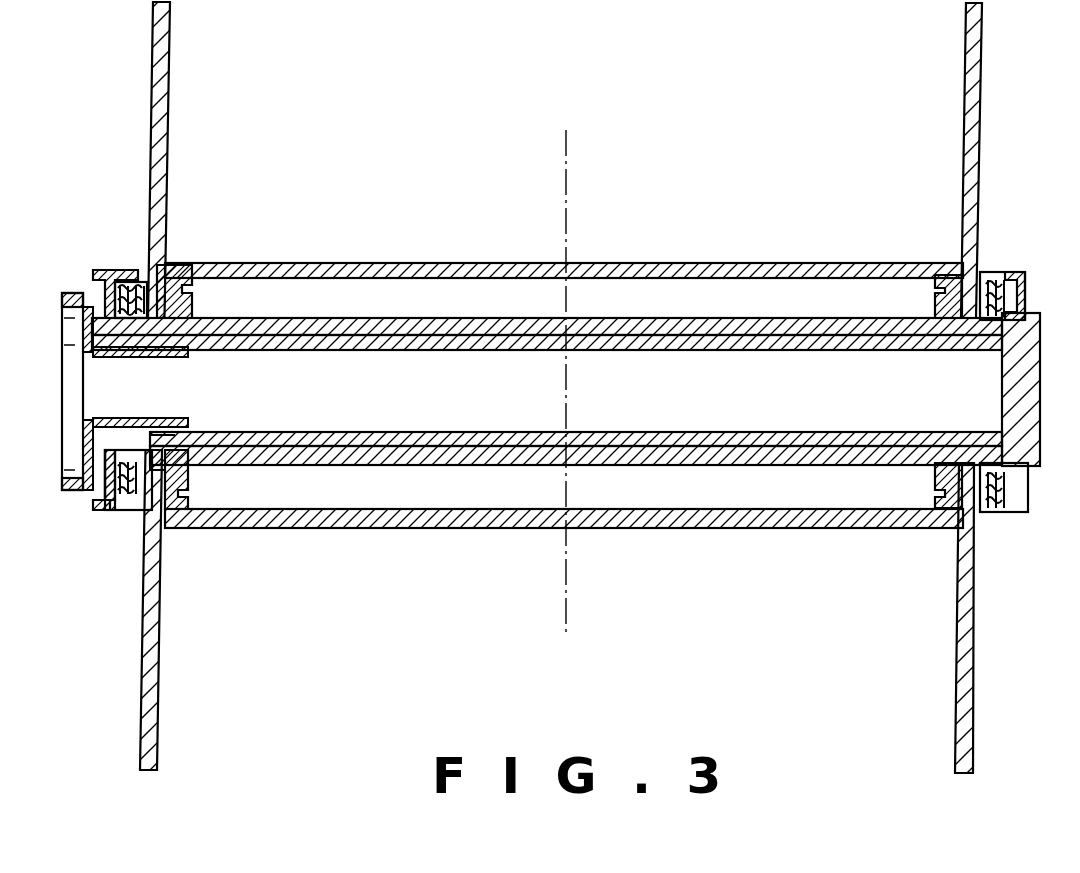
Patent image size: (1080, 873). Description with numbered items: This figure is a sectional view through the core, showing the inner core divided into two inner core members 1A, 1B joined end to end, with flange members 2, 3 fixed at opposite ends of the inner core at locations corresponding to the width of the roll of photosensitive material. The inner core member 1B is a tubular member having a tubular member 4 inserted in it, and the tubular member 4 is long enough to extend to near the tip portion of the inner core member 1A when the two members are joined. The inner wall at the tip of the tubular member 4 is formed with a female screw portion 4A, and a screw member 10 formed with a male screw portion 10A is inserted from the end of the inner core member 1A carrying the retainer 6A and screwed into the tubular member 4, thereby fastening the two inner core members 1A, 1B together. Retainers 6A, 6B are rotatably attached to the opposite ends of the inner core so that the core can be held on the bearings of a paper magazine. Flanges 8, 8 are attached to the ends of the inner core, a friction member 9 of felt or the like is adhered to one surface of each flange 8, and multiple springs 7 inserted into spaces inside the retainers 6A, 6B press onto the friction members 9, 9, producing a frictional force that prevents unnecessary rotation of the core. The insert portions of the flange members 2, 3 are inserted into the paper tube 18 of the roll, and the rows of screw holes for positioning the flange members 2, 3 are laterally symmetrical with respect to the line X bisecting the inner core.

The flange member 2 is at (172, 36).
The flange member 3 is at (963, 22).
The tubular member 4 is at (594, 336).
The female screw portion 4A is at (147, 445).
The inner core member 1A is at (430, 318).
The inner core member 1B is at (680, 330).
The retainer 6A is at (98, 270).
The retainer 6B is at (1028, 280).
The spring 7 is at (132, 282).
The flange 8 is at (166, 518).
The friction member 9 is at (130, 502).
The screw member 10 is at (78, 292).
The male screw portion 10A is at (172, 467).
The paper tube 18 is at (828, 262).
The line bisecting the inner core X is at (572, 176).